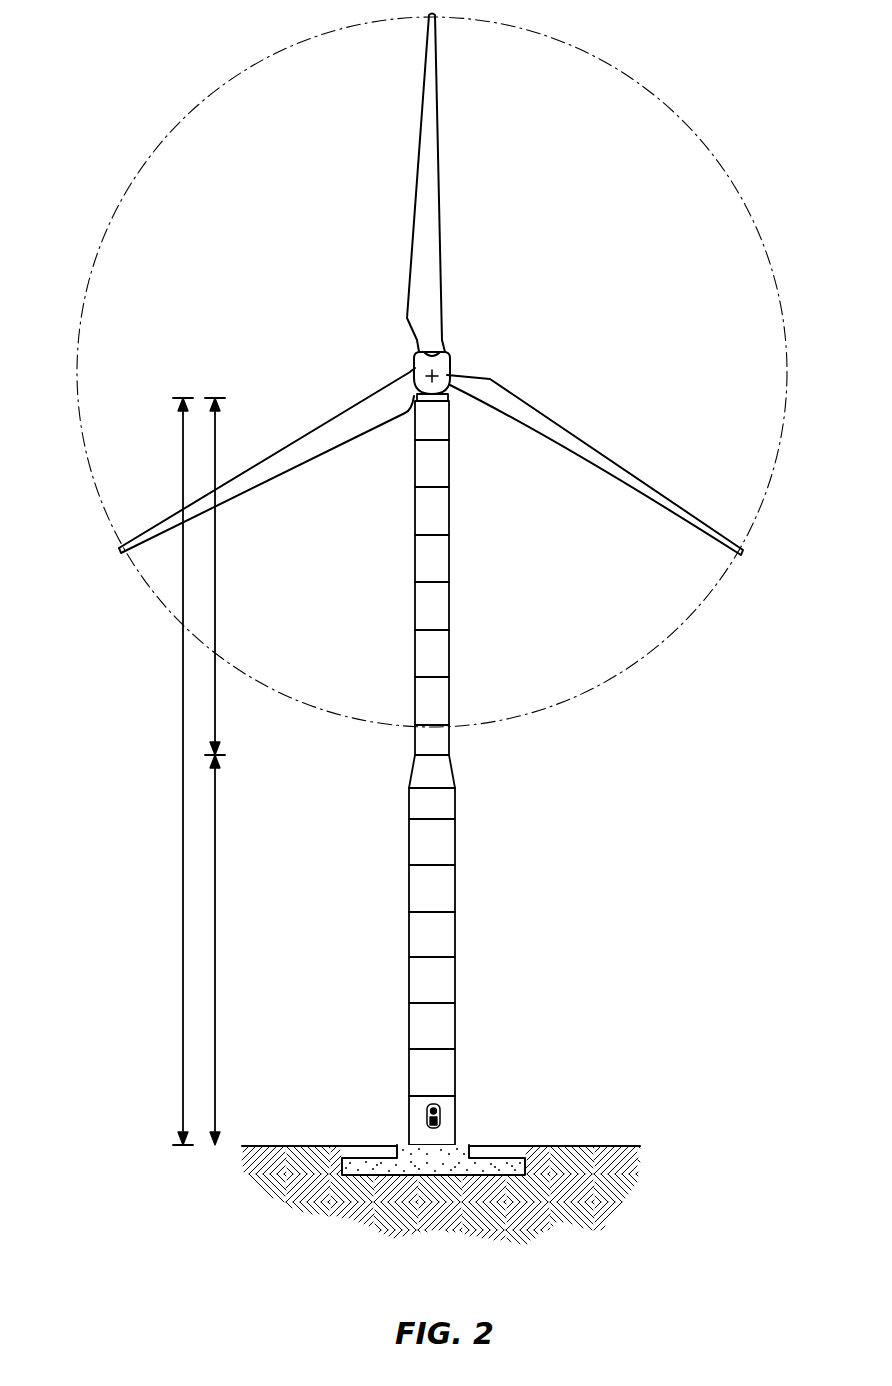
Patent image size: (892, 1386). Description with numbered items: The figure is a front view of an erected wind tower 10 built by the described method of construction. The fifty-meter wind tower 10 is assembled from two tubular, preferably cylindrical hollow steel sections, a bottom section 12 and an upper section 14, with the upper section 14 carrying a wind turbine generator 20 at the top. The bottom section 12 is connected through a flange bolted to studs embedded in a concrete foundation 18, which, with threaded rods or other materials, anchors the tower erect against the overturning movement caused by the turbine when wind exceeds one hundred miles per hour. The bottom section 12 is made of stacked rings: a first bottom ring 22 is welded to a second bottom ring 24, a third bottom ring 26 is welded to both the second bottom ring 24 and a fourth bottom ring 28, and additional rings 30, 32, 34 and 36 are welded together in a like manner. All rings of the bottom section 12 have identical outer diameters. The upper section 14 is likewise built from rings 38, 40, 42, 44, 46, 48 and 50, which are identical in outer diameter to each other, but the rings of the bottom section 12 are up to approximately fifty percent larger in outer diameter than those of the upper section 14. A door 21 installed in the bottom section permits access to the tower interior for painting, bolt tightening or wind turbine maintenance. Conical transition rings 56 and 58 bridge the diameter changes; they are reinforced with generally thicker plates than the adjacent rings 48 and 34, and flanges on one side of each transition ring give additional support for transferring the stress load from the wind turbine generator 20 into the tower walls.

The wind tower 10 is at (183, 838).
The bottom section 12 is at (216, 920).
The upper section 14 is at (216, 549).
The concrete foundation 18 is at (397, 1151).
The wind turbine generator 20 is at (449, 358).
The door 21 is at (427, 1112).
The first bottom ring 22 is at (458, 1117).
The second bottom ring 24 is at (458, 1072).
The third bottom ring 26 is at (458, 1027).
The fourth bottom ring 28 is at (458, 980).
The additional ring 30 is at (458, 934).
The additional ring 32 is at (458, 889).
The additional ring 34 is at (458, 842).
The additional ring 36 is at (458, 803).
The ring 38 is at (452, 738).
The ring 40 is at (452, 699).
The ring 42 is at (452, 659).
The ring 44 is at (452, 606).
The ring 46 is at (452, 559).
The ring 48 is at (452, 511).
The ring 50 is at (452, 465).
The transition ring 56 is at (408, 777).
The transition ring 58 is at (414, 418).